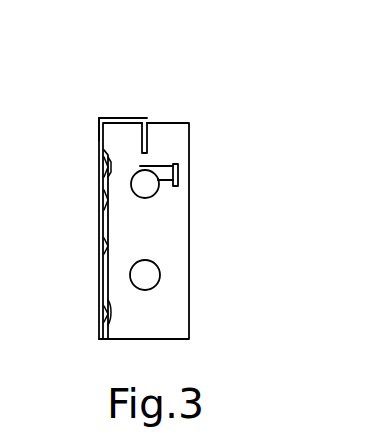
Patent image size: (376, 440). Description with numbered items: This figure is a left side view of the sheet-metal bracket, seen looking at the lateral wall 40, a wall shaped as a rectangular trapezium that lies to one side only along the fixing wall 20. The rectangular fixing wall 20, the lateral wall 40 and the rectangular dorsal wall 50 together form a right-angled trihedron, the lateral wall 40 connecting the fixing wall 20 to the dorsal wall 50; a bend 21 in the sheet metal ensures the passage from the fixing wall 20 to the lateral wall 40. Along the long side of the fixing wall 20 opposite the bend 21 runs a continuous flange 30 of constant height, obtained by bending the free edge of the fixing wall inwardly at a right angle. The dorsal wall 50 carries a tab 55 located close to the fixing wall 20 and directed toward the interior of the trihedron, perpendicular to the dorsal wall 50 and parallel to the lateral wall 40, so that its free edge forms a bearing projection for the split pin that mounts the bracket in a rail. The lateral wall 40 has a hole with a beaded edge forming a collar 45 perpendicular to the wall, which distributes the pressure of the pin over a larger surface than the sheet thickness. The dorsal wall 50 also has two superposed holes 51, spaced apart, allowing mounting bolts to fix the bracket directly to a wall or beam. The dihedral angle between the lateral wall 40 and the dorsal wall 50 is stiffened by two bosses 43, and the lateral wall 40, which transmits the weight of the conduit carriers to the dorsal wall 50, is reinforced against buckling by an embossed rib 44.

The fixing wall 20 is at (117, 118).
The bend 21 is at (99, 118).
The continuous flange 30 is at (150, 128).
The lateral wall 40 is at (104, 178).
The bosses 43 is at (105, 320).
The embossed rib 44 is at (105, 246).
The collar 45 is at (110, 172).
The dorsal wall 50 is at (166, 308).
The holes 51 is at (145, 198).
The tab 55 is at (180, 175).